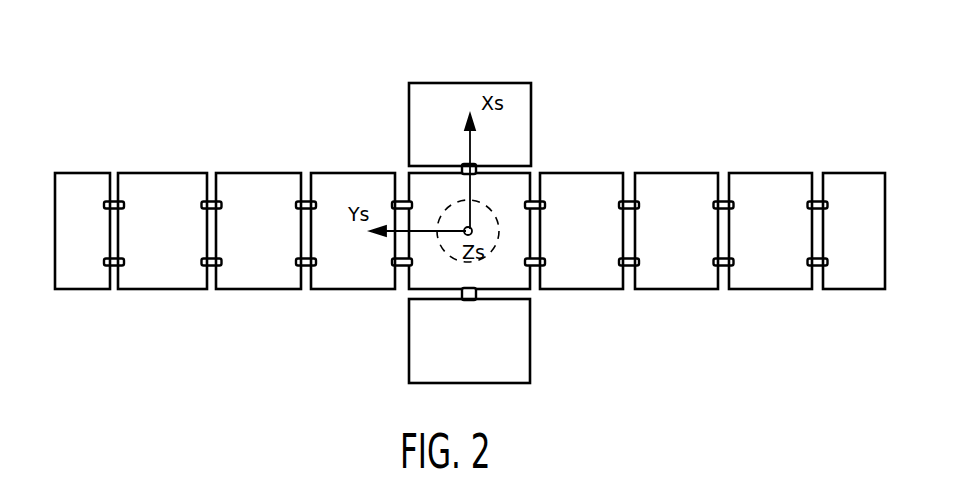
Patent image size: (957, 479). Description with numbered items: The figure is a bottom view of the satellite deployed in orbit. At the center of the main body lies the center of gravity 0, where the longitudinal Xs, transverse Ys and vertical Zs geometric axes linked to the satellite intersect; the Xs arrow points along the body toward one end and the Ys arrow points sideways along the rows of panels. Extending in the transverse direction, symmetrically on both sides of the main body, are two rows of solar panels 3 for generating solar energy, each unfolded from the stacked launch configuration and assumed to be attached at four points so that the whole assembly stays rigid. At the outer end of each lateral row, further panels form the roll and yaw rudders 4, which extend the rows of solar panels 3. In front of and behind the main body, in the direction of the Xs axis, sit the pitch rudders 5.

The center of gravity 0 is at (473, 228).
The solar panels 3 is at (325, 180).
The roll and yaw rudders 4 is at (79, 184).
The pitch rudders 5 is at (518, 90).